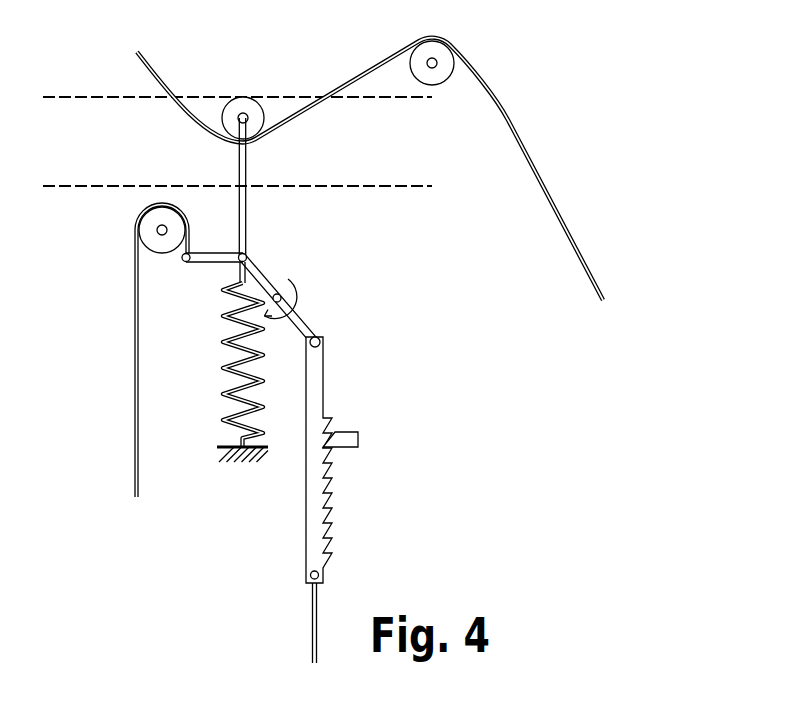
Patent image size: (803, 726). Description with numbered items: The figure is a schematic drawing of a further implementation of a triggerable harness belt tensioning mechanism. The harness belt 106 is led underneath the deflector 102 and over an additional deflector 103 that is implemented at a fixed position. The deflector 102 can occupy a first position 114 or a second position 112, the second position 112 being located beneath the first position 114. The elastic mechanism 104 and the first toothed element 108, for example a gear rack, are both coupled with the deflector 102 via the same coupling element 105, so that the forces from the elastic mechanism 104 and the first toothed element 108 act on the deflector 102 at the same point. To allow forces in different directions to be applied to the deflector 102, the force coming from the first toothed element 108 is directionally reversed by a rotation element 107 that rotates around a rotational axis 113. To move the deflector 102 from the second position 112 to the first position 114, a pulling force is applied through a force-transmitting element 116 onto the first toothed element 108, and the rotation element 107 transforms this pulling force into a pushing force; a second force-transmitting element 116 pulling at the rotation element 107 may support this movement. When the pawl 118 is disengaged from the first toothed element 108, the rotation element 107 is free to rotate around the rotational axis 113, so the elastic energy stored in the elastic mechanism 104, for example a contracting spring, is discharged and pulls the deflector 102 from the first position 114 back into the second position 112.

The deflector 102 is at (228, 115).
The additional deflector 103 is at (443, 68).
The elastic mechanism 104 is at (238, 385).
The coupling element 105 is at (242, 165).
The harness belt 106 is at (580, 247).
The rotation element 107 is at (305, 327).
The first toothed element 108 is at (328, 508).
The second position 112 is at (393, 187).
The rotational axis 113 is at (273, 289).
The first position 114 is at (393, 98).
The force-transmitting element 116 is at (134, 460).
The pawl 118 is at (358, 438).